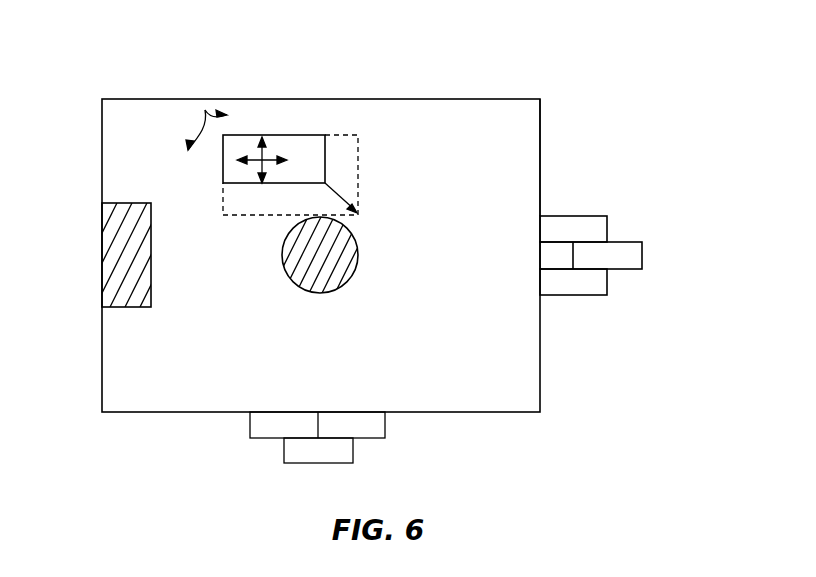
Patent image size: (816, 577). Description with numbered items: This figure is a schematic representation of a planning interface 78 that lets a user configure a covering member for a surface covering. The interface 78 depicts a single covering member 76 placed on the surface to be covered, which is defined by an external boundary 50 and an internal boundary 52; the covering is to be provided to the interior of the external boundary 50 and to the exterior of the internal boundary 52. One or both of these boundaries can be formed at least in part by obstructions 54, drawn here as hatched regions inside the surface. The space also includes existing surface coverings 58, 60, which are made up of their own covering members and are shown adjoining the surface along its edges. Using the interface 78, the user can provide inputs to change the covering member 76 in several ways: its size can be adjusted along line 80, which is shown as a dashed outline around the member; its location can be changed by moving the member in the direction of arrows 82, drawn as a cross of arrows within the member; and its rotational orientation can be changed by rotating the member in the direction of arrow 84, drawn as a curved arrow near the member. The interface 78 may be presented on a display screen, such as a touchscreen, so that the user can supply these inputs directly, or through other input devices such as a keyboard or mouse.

The boundary 50 is at (147, 413).
The boundary 52 is at (320, 293).
The obstructions 54 is at (151, 268).
The existing surface covering 58 is at (395, 445).
The existing surface covering 60 is at (688, 192).
The covering member 76 is at (308, 135).
The planning interface 78 is at (607, 95).
The line 80 is at (337, 195).
The arrows 82 is at (258, 137).
The arrow 84 is at (205, 110).